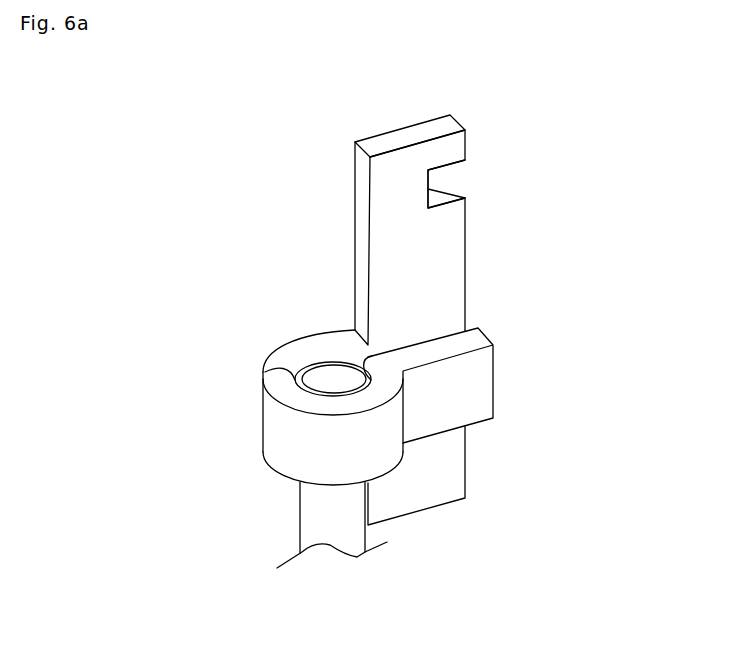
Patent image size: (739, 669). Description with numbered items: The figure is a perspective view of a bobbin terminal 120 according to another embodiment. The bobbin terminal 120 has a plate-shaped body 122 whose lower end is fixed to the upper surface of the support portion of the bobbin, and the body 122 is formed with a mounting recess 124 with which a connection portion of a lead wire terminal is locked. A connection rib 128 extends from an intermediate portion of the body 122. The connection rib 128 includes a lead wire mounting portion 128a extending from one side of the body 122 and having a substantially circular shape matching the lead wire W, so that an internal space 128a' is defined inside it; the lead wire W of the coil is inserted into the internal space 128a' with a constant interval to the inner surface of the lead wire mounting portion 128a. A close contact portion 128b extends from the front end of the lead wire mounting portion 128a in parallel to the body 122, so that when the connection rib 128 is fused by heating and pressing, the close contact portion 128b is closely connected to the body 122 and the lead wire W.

The bobbin terminal 120 is at (303, 308).
The body 122 is at (437, 287).
The mounting recess 124 is at (445, 198).
The connection rib 128 is at (631, 546).
The lead wire mounting portion 128a is at (403, 456).
The internal space 128a' is at (201, 390).
The close contact portion 128b is at (452, 410).
The lead wire W is at (317, 523).